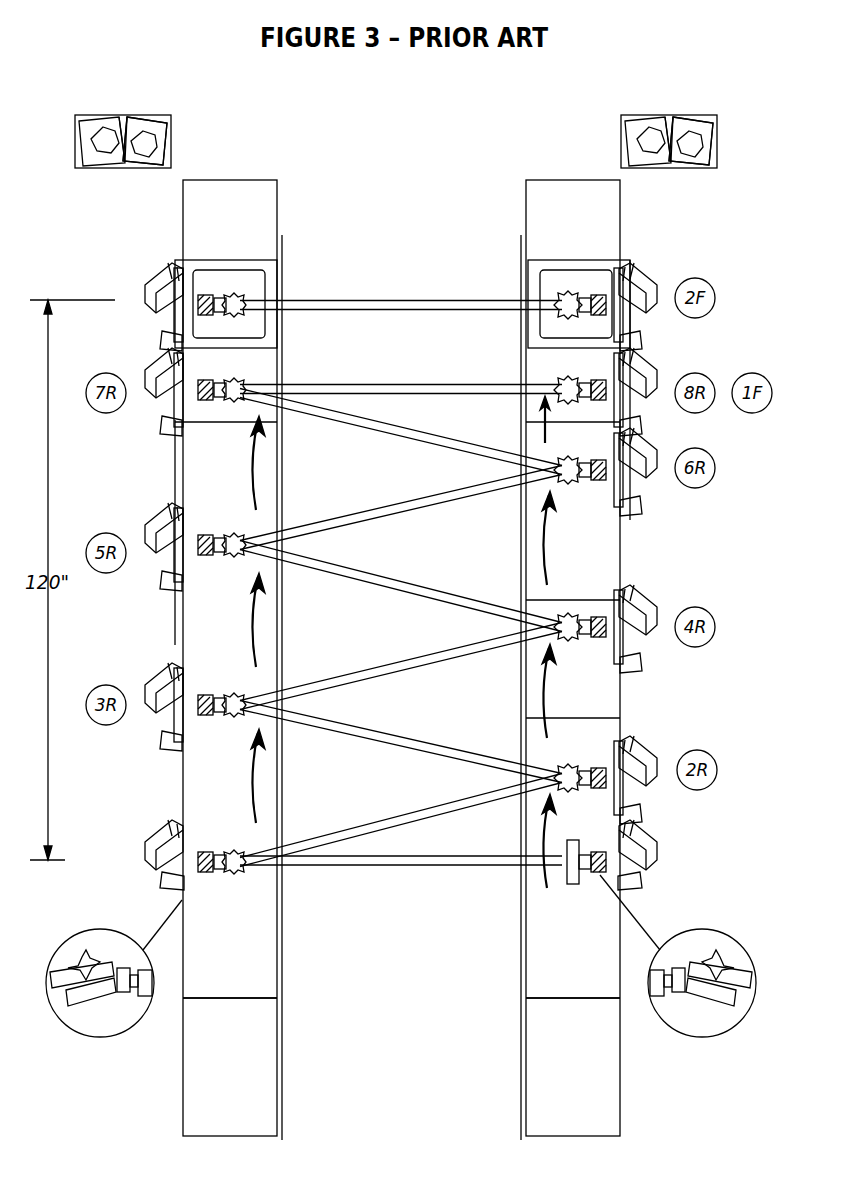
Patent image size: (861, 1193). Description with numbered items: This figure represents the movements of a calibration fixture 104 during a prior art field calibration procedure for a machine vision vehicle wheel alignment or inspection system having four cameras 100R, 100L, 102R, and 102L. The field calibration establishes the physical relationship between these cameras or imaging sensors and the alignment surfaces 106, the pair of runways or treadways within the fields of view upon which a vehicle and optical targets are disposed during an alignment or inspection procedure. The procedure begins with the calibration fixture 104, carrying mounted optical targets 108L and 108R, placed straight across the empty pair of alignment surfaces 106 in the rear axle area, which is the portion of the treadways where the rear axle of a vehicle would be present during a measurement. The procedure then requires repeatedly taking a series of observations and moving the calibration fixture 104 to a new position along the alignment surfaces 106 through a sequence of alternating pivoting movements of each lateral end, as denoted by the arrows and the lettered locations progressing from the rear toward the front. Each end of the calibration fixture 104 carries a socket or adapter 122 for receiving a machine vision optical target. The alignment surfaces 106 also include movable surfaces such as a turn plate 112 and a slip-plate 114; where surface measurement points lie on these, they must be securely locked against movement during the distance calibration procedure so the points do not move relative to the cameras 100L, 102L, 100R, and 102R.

The camera 100L is at (91, 117).
The camera 102L is at (150, 117).
The camera 100R is at (641, 117).
The camera 102R is at (697, 117).
The alignment surface 106 is at (279, 193).
The turn plate 112 is at (557, 292).
The calibration fixture 104 is at (380, 876).
The slip-plate 114 is at (401, 952).
The optical target 108L is at (166, 838).
The optical target 108R is at (639, 846).
The socket or adapter 122 is at (122, 1014).